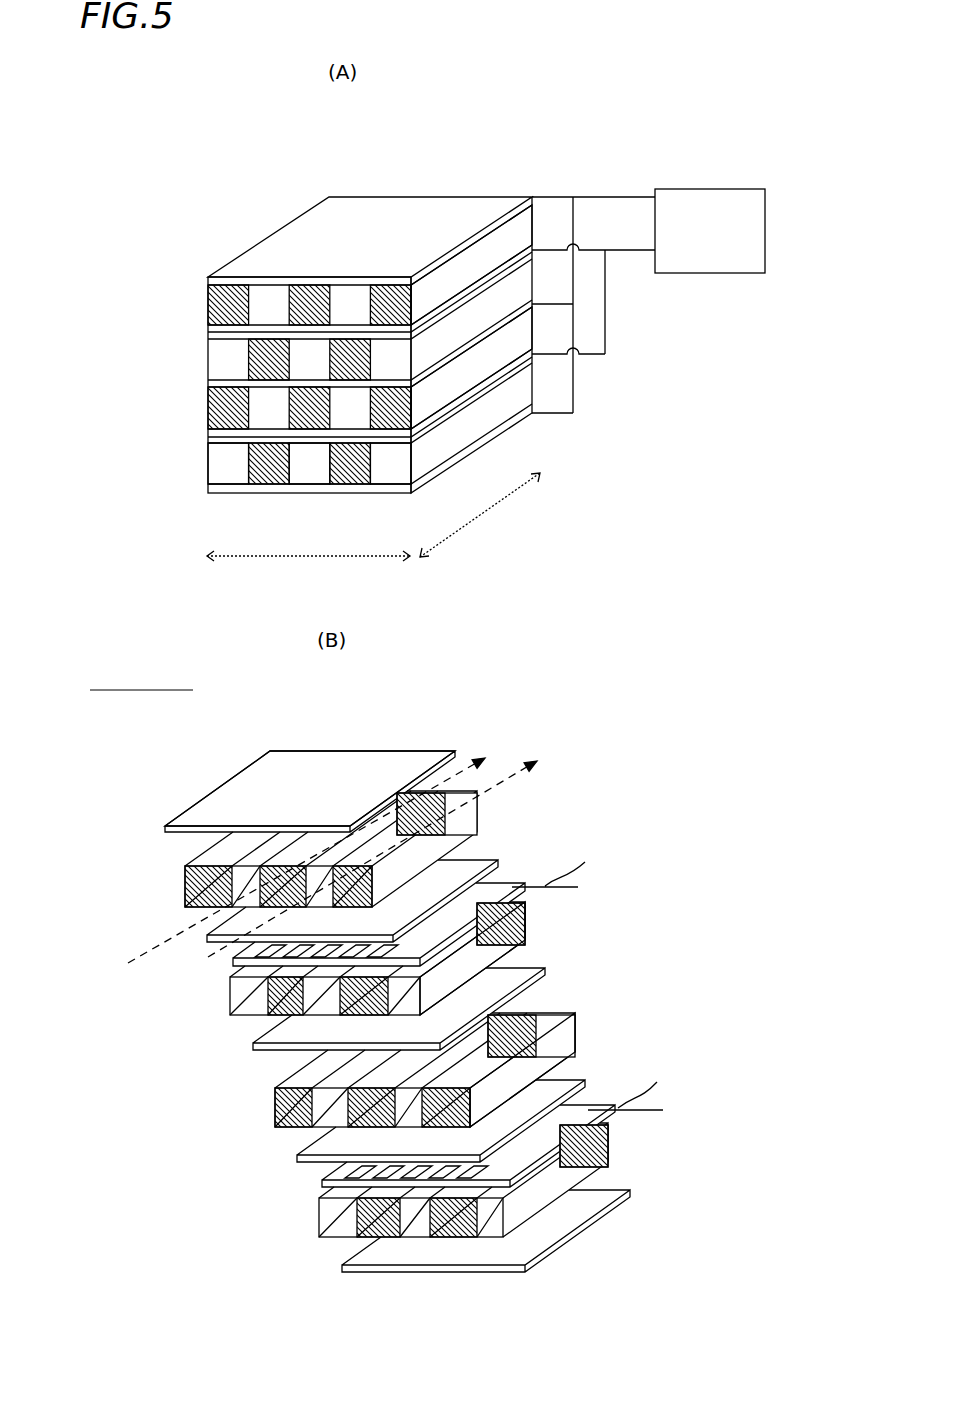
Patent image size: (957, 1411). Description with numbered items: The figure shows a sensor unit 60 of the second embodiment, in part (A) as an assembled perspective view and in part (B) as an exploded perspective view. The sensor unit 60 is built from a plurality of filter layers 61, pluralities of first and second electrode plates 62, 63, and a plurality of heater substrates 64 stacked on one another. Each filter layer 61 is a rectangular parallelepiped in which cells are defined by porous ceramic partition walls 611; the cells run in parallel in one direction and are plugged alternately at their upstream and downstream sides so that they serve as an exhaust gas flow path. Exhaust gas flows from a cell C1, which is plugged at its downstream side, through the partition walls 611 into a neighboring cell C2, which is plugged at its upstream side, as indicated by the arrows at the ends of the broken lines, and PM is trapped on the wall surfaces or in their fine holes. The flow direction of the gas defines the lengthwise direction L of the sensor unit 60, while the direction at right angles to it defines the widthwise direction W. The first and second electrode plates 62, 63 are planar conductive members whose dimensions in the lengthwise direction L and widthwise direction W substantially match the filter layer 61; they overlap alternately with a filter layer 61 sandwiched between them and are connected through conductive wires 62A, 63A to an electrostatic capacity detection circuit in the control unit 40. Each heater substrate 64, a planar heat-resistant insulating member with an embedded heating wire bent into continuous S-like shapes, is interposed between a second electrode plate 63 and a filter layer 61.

The sensor unit 60 is at (447, 172).
The filter layer 61 is at (208, 302).
The first electrode plate 62 is at (208, 281).
The second electrode plate 63 is at (208, 329).
The heater substrate 64 is at (208, 336).
The partition wall 611 is at (510, 292).
The conductive wire 62A is at (613, 196).
The conductive wire 63A is at (630, 251).
The control unit 40 is at (723, 250).
The cell C1 is at (222, 490).
The cell C2 is at (266, 487).
The widthwise direction W is at (308, 569).
The lengthwise direction L is at (542, 791).